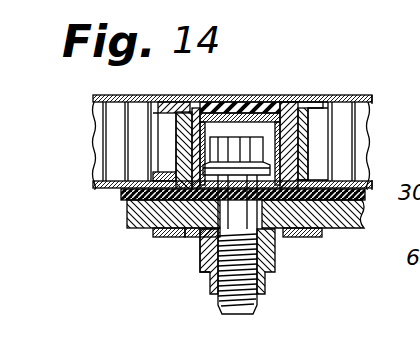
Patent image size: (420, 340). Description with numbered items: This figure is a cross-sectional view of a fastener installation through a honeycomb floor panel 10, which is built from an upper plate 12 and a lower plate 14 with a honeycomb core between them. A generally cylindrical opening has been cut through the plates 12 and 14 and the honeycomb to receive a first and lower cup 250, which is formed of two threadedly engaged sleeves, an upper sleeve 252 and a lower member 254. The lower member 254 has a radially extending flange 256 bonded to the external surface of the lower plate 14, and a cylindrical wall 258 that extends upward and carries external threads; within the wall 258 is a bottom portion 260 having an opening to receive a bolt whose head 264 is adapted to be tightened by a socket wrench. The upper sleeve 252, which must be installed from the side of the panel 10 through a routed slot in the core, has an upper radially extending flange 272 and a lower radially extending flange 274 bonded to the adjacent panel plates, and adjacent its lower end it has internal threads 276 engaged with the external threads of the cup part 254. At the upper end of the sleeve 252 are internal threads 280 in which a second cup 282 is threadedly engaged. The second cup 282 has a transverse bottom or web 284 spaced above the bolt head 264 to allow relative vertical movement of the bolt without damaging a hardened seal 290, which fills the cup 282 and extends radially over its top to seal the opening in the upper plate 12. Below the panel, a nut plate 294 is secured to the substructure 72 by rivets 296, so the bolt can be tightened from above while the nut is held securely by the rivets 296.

The honeycomb floor panel 10 is at (84, 153).
The upper plate 12 is at (126, 96).
The lower plate 14 is at (93, 190).
The substructure 72 is at (128, 218).
The first and lower cup 250 is at (314, 153).
The upper sleeve 252 is at (308, 167).
The lower member 254 is at (279, 204).
The radially extending flange 256 is at (124, 193).
The cylindrical wall 258 is at (184, 143).
The bottom portion 260 is at (200, 237).
The bolt head 264 is at (242, 175).
The upper radially extending flange 272 is at (177, 101).
The lower radially extending flange 274 is at (325, 236).
The internal threads 276 is at (320, 132).
The internal threads 280 is at (297, 101).
The second cup 282 is at (206, 100).
The transverse bottom or web 284 is at (276, 101).
The hardened seal 290 is at (222, 112).
The nut plate 294 is at (203, 250).
The rivets 296 is at (163, 237).